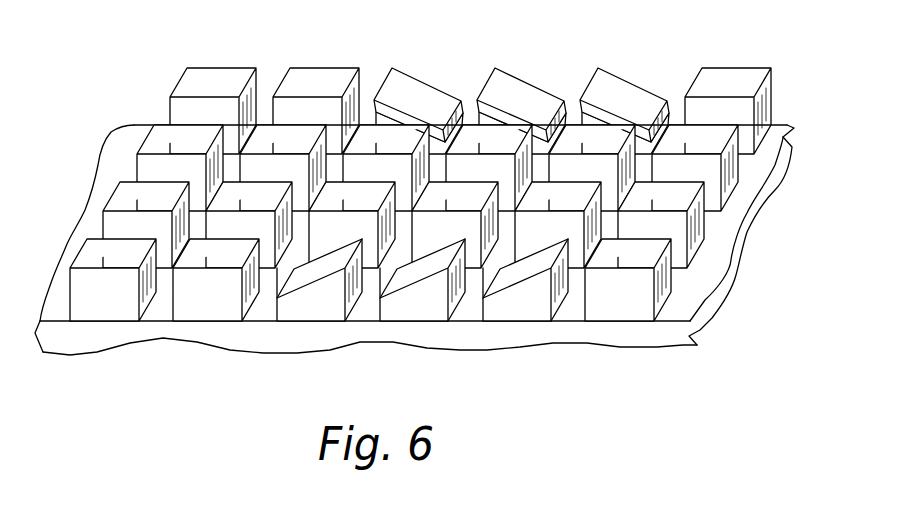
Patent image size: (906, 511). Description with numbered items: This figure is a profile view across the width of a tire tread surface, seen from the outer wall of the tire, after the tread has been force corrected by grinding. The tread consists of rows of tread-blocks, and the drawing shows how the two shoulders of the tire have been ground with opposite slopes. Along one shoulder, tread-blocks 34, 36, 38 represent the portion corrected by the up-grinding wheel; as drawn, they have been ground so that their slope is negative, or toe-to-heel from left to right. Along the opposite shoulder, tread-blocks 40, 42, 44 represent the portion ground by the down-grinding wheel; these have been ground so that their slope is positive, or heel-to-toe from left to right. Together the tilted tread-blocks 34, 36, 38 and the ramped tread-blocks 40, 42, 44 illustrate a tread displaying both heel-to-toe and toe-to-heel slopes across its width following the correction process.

The tread-block 34 is at (401, 76).
The tread-block 36 is at (504, 77).
The tread-block 38 is at (607, 77).
The tread-block 40 is at (328, 300).
The tread-block 42 is at (430, 300).
The tread-block 44 is at (533, 299).